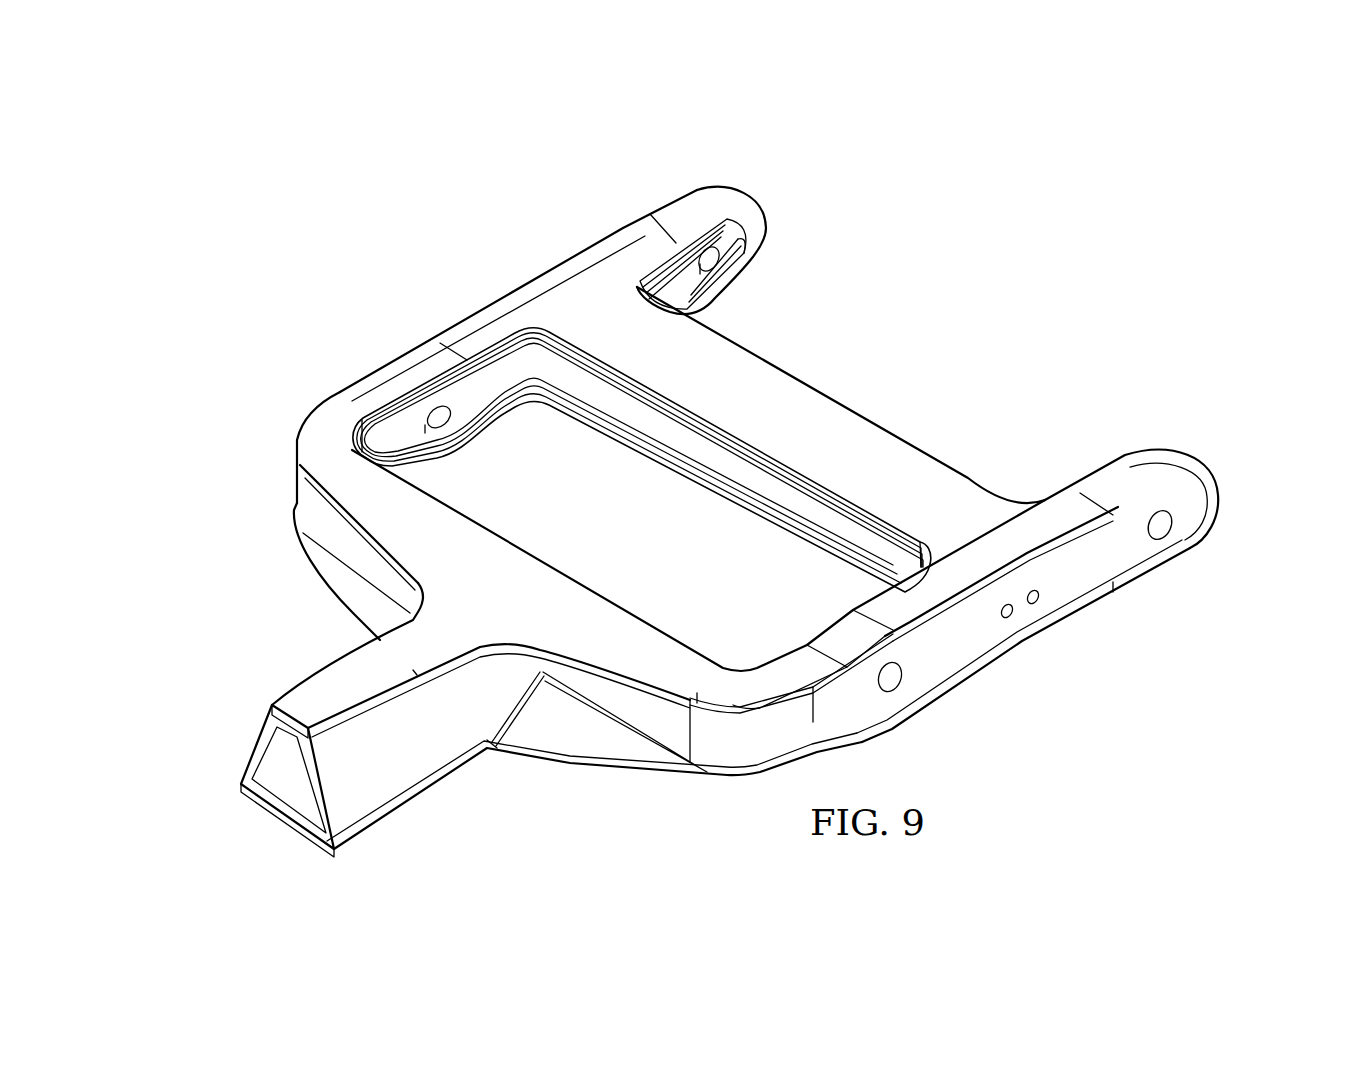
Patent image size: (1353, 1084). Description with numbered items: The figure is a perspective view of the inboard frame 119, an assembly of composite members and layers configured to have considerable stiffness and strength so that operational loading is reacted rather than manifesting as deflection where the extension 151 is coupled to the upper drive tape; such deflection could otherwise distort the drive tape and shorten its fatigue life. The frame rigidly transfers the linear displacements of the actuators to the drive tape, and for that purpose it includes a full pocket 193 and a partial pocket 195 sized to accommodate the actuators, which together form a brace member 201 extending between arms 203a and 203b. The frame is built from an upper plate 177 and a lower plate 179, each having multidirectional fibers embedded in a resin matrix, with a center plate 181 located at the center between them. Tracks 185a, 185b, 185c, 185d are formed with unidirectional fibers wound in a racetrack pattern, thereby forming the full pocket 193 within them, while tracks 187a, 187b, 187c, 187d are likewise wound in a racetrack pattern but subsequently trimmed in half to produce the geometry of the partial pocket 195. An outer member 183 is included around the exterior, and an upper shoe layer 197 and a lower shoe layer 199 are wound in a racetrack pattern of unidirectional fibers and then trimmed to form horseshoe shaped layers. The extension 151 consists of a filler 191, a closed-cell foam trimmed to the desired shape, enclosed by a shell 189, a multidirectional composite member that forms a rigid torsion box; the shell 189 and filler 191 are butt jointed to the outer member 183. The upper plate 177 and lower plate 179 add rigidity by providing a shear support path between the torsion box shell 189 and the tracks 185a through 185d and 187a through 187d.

The inboard frame 119 is at (425, 298).
The extension 151 is at (241, 745).
The upper plate 177 is at (311, 487).
The lower plate 179 is at (620, 773).
The center plate 181 is at (423, 425).
The outer member 183 is at (1197, 498).
The track 185a is at (630, 387).
The track 185b is at (693, 432).
The track 185c is at (610, 437).
The track 185d is at (693, 473).
The track 187a is at (668, 257).
The track 187b is at (727, 213).
The track 187c is at (720, 280).
The track 187d is at (700, 312).
The shell 189 is at (527, 703).
The filler 191 is at (290, 800).
The full pocket 193 is at (724, 593).
The partial pocket 195 is at (916, 371).
The upper shoe layer 197 is at (743, 230).
The lower shoe layer 199 is at (748, 247).
The brace member 201 is at (972, 474).
The arm 203a is at (527, 270).
The arm 203b is at (1034, 651).